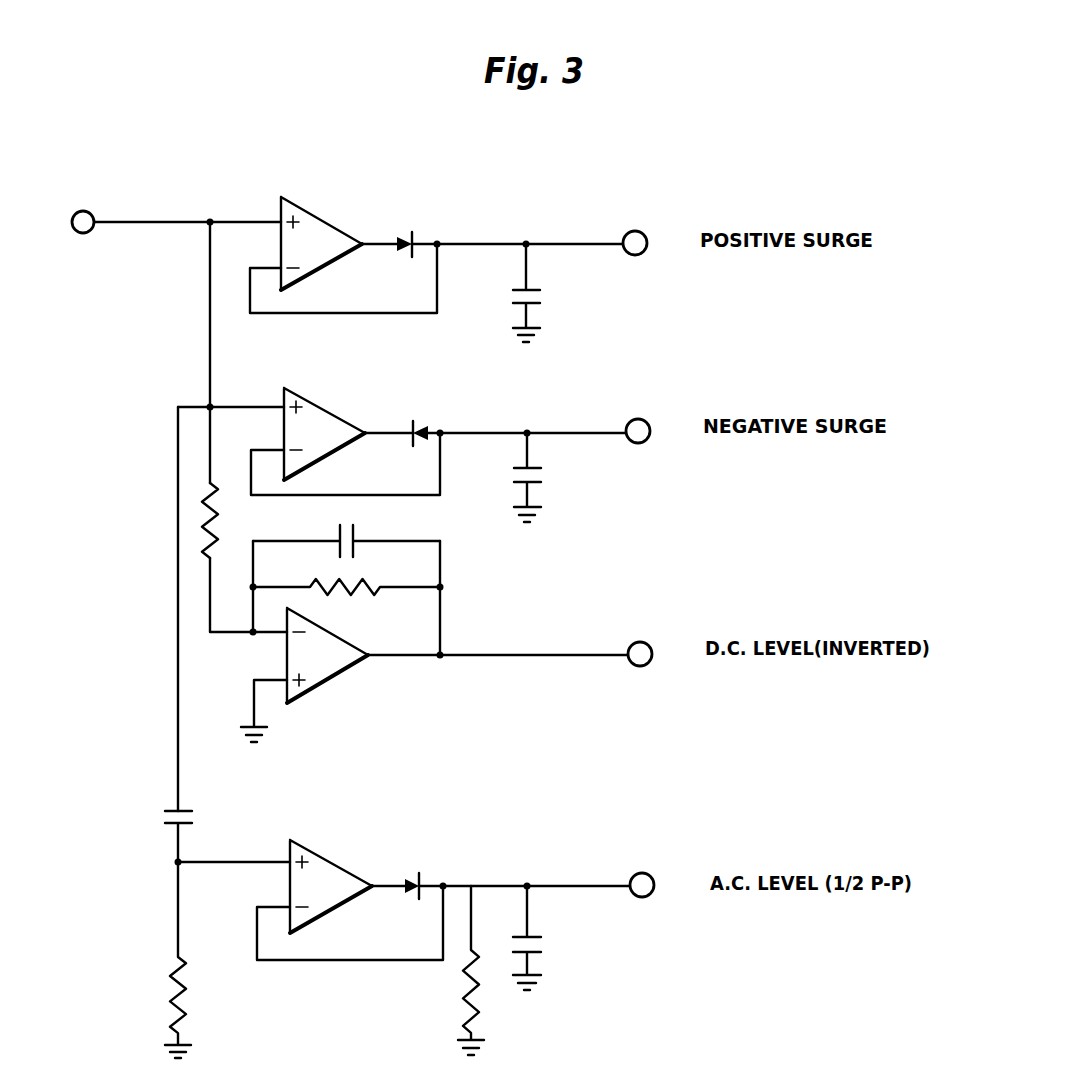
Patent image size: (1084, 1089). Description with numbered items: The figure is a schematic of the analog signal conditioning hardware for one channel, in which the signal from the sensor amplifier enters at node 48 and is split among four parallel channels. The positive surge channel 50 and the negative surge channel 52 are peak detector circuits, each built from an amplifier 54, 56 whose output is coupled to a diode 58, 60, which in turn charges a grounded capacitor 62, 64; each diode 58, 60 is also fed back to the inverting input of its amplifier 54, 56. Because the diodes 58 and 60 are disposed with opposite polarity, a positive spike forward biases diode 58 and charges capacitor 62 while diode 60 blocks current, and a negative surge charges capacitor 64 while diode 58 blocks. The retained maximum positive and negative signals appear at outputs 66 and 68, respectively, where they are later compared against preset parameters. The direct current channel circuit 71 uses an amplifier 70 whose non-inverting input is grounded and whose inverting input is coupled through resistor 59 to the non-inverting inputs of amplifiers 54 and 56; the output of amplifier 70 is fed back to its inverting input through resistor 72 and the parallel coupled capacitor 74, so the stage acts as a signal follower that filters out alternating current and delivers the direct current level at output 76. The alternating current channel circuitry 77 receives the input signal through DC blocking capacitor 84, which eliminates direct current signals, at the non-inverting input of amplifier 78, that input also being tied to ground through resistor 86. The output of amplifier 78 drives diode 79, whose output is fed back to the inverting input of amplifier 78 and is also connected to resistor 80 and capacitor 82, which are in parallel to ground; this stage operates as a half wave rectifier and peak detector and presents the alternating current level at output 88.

The node 48 is at (92, 213).
The positive surge channel 50 is at (492, 204).
The negative surge channel 52 is at (482, 406).
The amplifier 54 is at (326, 219).
The amplifier 56 is at (326, 409).
The diode 58 is at (409, 231).
The resistor 59 is at (224, 520).
The diode 60 is at (420, 421).
The capacitor 62 is at (540, 293).
The capacitor 64 is at (541, 477).
The output 66 is at (672, 214).
The output 68 is at (676, 402).
The amplifier 70 is at (310, 690).
The direct current channel circuit 71 is at (522, 600).
The resistor 72 is at (347, 600).
The capacitor 74 is at (346, 545).
The output 76 is at (680, 626).
The alternating current channel circuitry 77 is at (483, 803).
The amplifier 78 is at (363, 840).
The diode 79 is at (418, 874).
The resistor 80 is at (482, 970).
The capacitor 82 is at (541, 938).
The DC blocking capacitor 84 is at (190, 825).
The resistor 86 is at (193, 960).
The output 88 is at (680, 866).